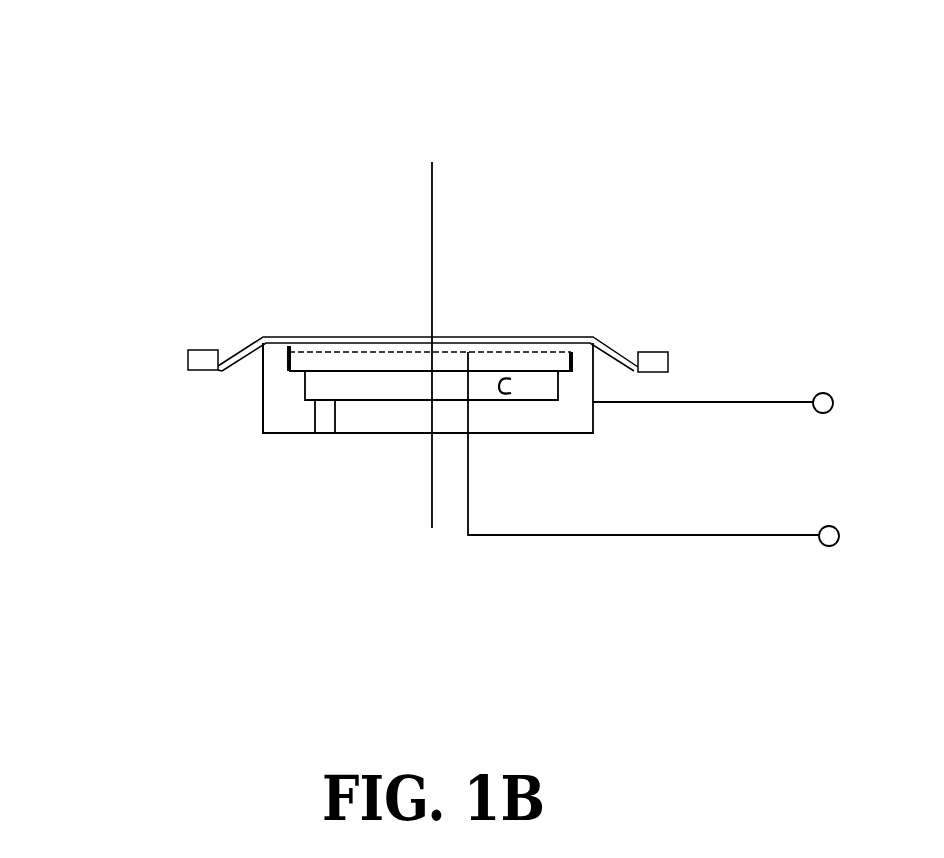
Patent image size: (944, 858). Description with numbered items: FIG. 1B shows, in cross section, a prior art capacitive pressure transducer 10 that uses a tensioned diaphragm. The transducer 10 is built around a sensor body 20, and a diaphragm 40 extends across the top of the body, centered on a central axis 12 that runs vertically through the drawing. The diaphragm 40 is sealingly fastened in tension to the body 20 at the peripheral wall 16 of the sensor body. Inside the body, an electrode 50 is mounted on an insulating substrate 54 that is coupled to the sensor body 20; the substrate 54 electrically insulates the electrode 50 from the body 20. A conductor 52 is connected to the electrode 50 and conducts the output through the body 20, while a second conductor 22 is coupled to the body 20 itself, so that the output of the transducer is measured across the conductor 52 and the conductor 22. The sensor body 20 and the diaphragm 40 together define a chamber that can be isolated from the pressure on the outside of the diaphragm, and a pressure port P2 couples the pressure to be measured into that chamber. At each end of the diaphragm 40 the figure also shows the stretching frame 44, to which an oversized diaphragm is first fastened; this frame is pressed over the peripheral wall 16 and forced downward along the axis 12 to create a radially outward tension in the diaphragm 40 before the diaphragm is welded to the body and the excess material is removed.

The capacitive pressure transducer 10 is at (145, 123).
The central axis 12 is at (432, 190).
The peripheral wall 16 is at (272, 352).
The sensor body 20 is at (575, 423).
The conductor 22 is at (745, 402).
The diaphragm 40 is at (510, 338).
The stretching frame 44 is at (655, 357).
The electrode 50 is at (373, 338).
The conductor 52 is at (572, 537).
The insulating substrate 54 is at (307, 362).
The pressure port P2 is at (325, 423).